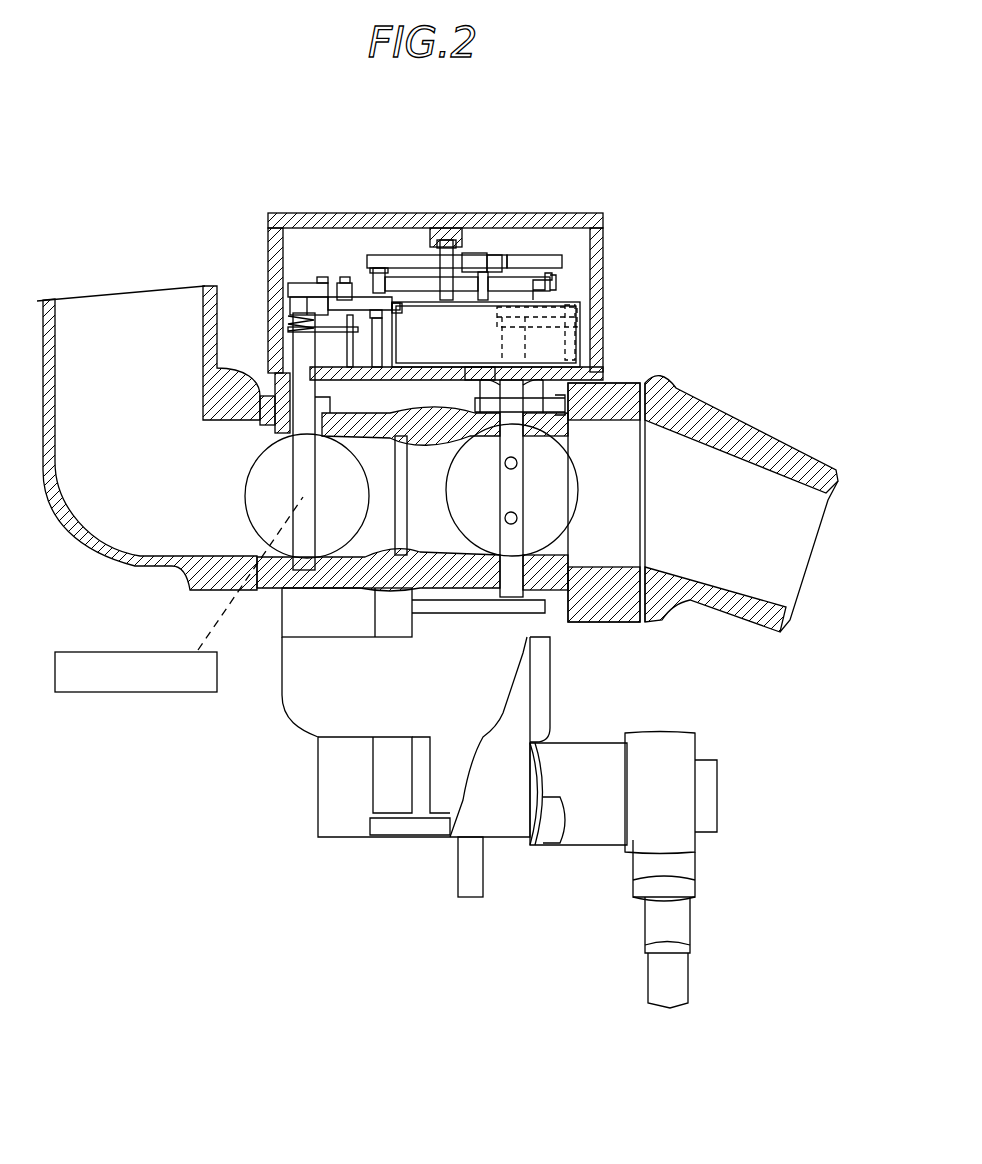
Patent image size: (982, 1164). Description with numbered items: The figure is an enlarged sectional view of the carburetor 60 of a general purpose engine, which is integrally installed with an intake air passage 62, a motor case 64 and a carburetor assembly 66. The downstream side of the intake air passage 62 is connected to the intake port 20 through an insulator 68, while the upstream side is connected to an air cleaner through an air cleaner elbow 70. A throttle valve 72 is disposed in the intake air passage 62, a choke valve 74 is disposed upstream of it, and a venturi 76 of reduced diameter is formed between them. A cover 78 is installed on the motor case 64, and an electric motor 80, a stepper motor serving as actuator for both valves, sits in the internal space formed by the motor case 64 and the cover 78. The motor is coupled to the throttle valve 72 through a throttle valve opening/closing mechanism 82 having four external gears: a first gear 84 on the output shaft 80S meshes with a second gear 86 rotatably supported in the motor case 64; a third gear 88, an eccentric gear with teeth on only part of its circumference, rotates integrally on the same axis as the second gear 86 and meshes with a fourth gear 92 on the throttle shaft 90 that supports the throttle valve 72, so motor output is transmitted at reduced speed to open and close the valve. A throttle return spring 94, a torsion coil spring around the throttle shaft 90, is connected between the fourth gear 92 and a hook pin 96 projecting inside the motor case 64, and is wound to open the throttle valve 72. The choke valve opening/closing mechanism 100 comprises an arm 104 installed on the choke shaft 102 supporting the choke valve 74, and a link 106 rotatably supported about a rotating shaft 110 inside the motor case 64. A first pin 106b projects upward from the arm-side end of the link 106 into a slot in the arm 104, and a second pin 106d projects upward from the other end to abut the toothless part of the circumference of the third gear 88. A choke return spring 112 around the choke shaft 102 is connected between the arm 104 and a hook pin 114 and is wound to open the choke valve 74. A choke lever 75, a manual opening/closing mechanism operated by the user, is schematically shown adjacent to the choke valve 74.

The intake port 20 is at (752, 614).
The carburetor 60 is at (625, 202).
The intake air passage 62 is at (302, 567).
The motor case 64 is at (600, 312).
The carburetor assembly 66 is at (318, 717).
The insulator 68 is at (632, 383).
The air cleaner elbow 70 is at (110, 553).
The throttle valve 72 is at (570, 503).
The choke valve 74 is at (195, 590).
The choke lever 75 is at (90, 692).
The venturi 76 is at (405, 537).
The cover 78 is at (608, 222).
The electric motor 80 is at (421, 348).
The output shaft 80S is at (480, 257).
The throttle valve opening/closing mechanism 82 is at (496, 236).
The first gear 84 is at (513, 255).
The second gear 86 is at (540, 278).
The third gear 88 is at (410, 280).
The throttle shaft 90 is at (520, 537).
The fourth gear 92 is at (538, 258).
The throttle return spring 94 is at (580, 287).
The hook pin 96 is at (582, 352).
The choke valve opening/closing mechanism 100 is at (302, 284).
The choke shaft 102 is at (283, 617).
The arm 104 is at (302, 287).
The link 106 is at (344, 278).
The first pin 106b is at (323, 253).
The second pin 106d is at (380, 270).
The rotating shaft 110 is at (377, 318).
The choke return spring 112 is at (293, 312).
The hook pin 114 is at (348, 350).